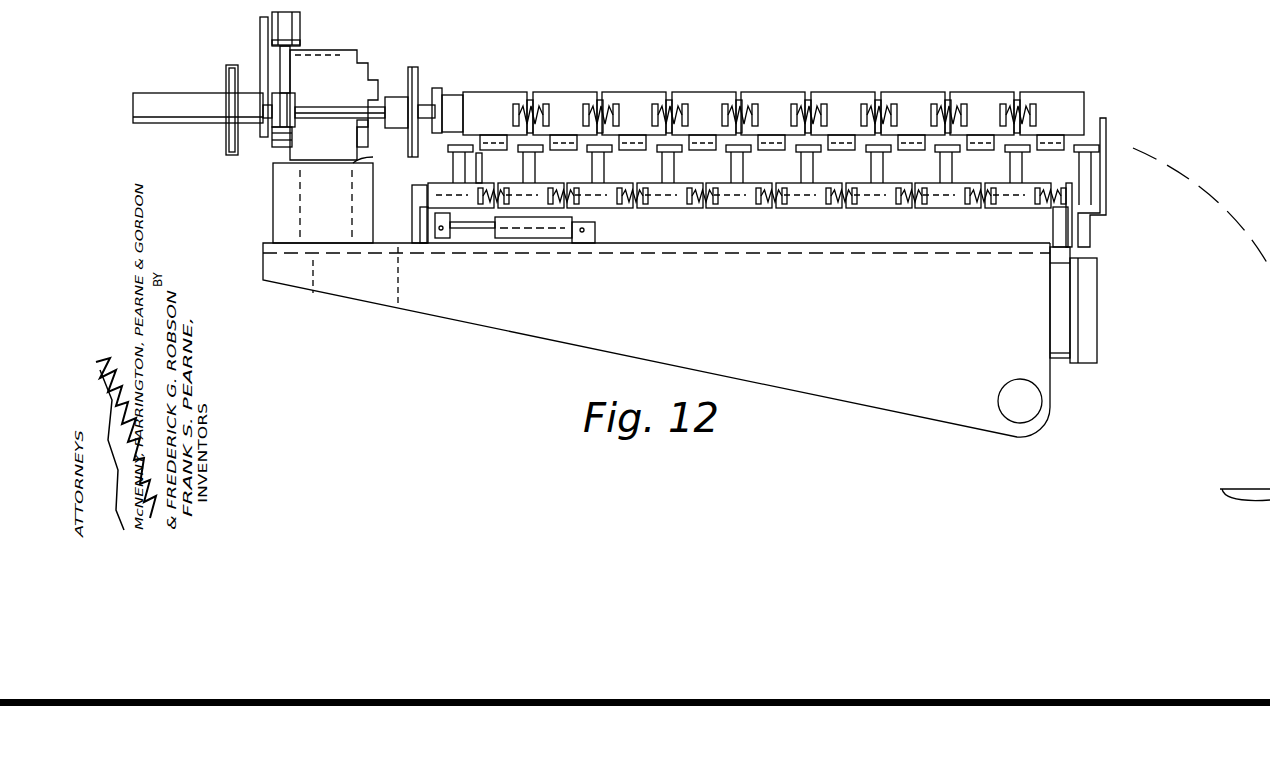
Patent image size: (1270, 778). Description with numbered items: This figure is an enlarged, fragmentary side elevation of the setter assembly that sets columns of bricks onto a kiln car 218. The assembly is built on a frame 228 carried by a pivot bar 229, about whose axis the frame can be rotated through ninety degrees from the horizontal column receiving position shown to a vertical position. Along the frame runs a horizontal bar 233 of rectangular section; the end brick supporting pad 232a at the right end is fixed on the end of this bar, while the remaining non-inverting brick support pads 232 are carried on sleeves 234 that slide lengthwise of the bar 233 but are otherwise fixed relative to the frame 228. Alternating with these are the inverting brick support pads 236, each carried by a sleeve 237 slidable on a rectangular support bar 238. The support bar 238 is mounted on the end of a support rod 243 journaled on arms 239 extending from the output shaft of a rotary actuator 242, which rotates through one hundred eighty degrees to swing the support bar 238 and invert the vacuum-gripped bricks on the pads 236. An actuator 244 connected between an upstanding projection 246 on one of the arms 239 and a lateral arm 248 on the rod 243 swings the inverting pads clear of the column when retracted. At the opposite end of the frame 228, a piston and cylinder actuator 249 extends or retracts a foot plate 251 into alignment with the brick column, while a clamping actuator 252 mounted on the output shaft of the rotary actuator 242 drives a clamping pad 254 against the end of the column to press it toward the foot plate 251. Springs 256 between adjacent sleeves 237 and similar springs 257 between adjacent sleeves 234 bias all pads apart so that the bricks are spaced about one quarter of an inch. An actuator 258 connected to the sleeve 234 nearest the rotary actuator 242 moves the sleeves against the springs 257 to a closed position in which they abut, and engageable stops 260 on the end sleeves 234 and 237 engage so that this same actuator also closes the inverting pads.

The kiln car 218 is at (1248, 492).
The frame 228 is at (825, 377).
The pivot bar 229 is at (1023, 420).
The non-inverting brick support pads 232 is at (457, 147).
The end brick supporting pad 232a is at (1100, 147).
The horizontal bar 233 is at (413, 193).
The sleeves 234 is at (447, 183).
The inverting brick support pads 236 is at (553, 150).
The sleeve 237 is at (692, 95).
The support bar 238 is at (460, 95).
The arms 239 is at (410, 97).
The rotary actuator 242 is at (353, 42).
The support rod 243 is at (342, 120).
The actuator 244 is at (300, 33).
The upstanding projection 246 is at (263, 53).
The lateral arm 248 is at (283, 110).
The piston and cylinder actuator 249 is at (1100, 307).
The foot plate 251 is at (1107, 120).
The clamping actuator 252 is at (163, 100).
The clamping pad 254 is at (438, 87).
The springs 256 is at (742, 113).
The springs 257 is at (722, 207).
The actuator 258 is at (532, 240).
The engageable stops 260 is at (492, 150).